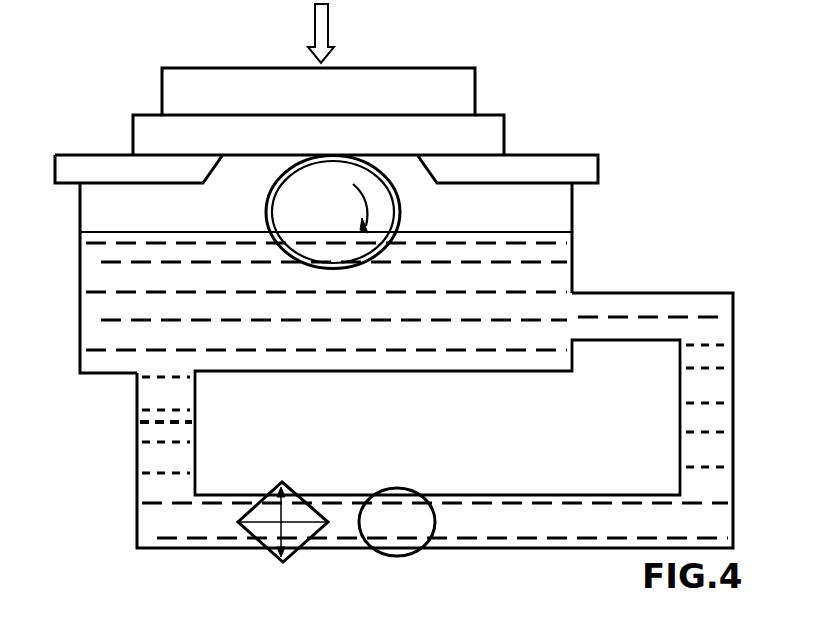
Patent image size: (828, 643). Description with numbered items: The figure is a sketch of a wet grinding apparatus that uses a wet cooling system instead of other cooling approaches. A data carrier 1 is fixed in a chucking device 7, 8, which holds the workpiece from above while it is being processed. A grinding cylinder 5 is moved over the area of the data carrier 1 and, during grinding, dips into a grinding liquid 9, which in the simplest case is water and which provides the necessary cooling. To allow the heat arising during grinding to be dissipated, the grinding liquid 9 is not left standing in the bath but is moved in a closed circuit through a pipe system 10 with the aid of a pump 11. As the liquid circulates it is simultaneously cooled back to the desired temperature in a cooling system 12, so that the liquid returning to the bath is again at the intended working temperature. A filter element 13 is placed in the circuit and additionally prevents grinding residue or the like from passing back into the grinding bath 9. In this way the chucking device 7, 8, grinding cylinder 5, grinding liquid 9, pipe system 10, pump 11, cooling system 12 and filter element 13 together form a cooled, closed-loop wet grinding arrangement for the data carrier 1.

The data carrier 1 is at (485, 140).
The grinding cylinder 5 is at (268, 205).
The chucking device 7 is at (585, 168).
The chucking device 8 is at (440, 90).
The grinding liquid 9 is at (107, 232).
The pipe system 10 is at (697, 415).
The pump 11 is at (403, 543).
The cooling system 12 is at (272, 548).
The filter element 13 is at (145, 424).